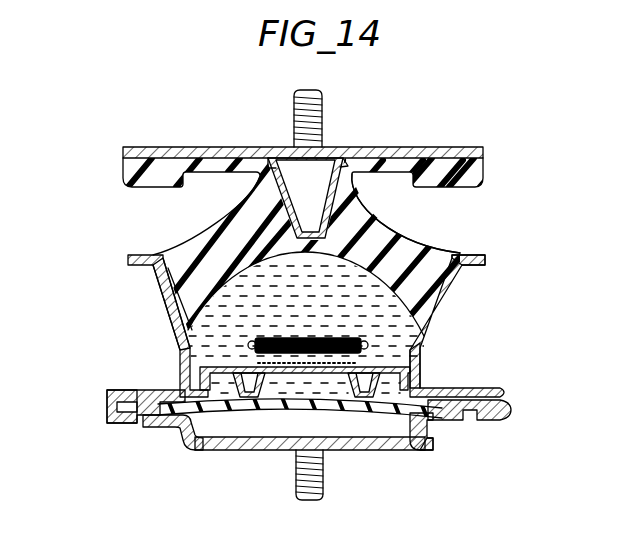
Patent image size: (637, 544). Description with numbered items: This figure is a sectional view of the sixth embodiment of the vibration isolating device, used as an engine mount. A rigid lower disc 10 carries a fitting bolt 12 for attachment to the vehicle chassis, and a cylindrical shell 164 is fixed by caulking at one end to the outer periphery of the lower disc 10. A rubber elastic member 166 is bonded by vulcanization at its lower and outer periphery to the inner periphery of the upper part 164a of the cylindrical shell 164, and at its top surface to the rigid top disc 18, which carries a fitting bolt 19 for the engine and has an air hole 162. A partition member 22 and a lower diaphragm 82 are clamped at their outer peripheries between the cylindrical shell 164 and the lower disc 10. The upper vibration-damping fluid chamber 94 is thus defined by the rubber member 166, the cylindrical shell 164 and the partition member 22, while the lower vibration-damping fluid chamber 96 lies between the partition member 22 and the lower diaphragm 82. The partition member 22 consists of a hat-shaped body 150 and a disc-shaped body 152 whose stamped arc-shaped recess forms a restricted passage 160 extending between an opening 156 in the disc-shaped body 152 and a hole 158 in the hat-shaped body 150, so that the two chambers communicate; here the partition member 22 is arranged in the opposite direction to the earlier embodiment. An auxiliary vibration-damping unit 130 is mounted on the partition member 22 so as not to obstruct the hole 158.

The lower disc 10 is at (223, 450).
The fitting bolt 12 is at (323, 490).
The top disc 18 is at (447, 147).
The fitting bolt 19 is at (323, 118).
The partition member 22 is at (423, 370).
The lower diaphragm 82 is at (330, 415).
The upper vibration-damping fluid chamber 94 is at (263, 287).
The lower vibration-damping fluid chamber 96 is at (290, 385).
The auxiliary vibration-damping unit 130 is at (506, 341).
The hat-shaped body 150 is at (190, 346).
The disc-shaped body 152 is at (180, 384).
The opening 156 is at (419, 452).
The hole 158 is at (176, 321).
The restricted passage 160 is at (197, 450).
The air hole 162 is at (410, 414).
The cylindrical shell 164 is at (184, 366).
The upper part of the cylindrical shell 164a is at (458, 282).
The rubber elastic member 166 is at (413, 238).